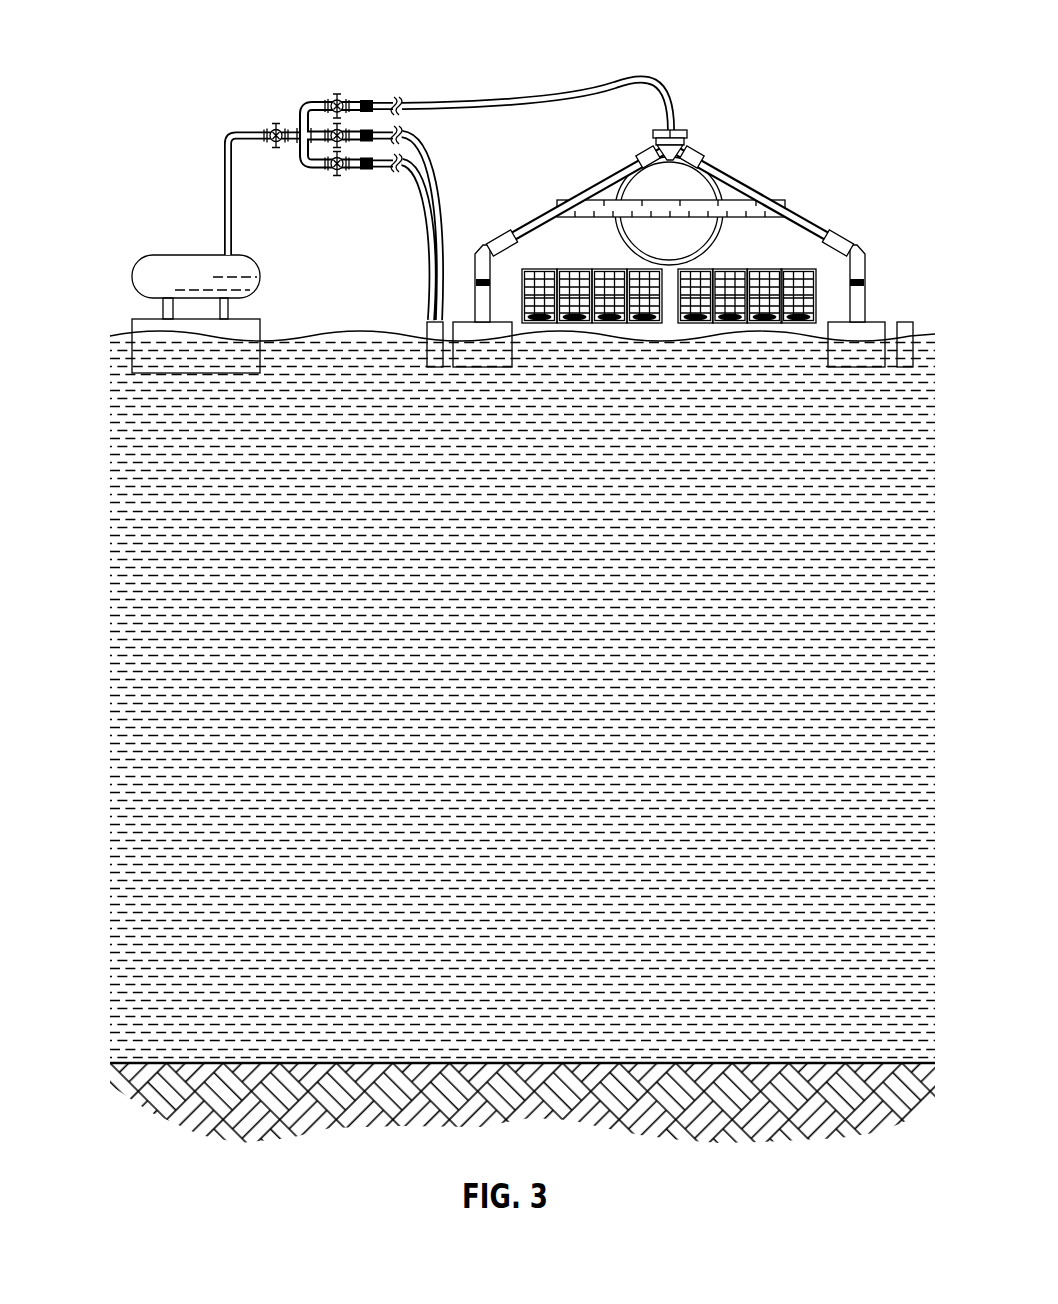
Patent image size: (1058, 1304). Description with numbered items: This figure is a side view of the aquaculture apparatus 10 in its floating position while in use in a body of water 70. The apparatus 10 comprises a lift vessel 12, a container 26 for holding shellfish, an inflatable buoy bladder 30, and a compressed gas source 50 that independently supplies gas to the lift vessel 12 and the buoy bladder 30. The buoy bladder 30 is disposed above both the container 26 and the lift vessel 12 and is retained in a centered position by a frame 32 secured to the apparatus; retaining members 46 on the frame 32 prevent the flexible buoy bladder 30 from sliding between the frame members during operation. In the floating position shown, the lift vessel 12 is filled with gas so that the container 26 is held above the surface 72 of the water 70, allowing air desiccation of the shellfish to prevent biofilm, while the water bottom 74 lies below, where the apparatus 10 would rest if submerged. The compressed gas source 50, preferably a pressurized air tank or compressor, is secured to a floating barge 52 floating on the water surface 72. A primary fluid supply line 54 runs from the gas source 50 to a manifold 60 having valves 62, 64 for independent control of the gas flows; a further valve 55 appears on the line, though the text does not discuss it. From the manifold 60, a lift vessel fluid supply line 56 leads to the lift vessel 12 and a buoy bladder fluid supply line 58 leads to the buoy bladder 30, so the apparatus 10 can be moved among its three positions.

The aquaculture apparatus 10 is at (176, 64).
The lift vessel 12 is at (778, 357).
The container 26 is at (576, 268).
The inflatable buoy bladder 30 is at (690, 192).
The frame 32 is at (852, 242).
The retaining members 46 is at (608, 204).
The compressed gas source 50 is at (152, 273).
The floating barge 52 is at (140, 327).
The primary fluid supply line 54 is at (224, 178).
The valve 55 is at (273, 122).
The lift vessel fluid supply line 56 is at (427, 178).
The buoy bladder fluid supply line 58 is at (540, 97).
The manifold 60 is at (303, 102).
The valve 62 is at (318, 150).
The valve 64 is at (340, 94).
The water 70 is at (253, 551).
The water surface 72 is at (339, 320).
The water bottom 74 is at (134, 1052).